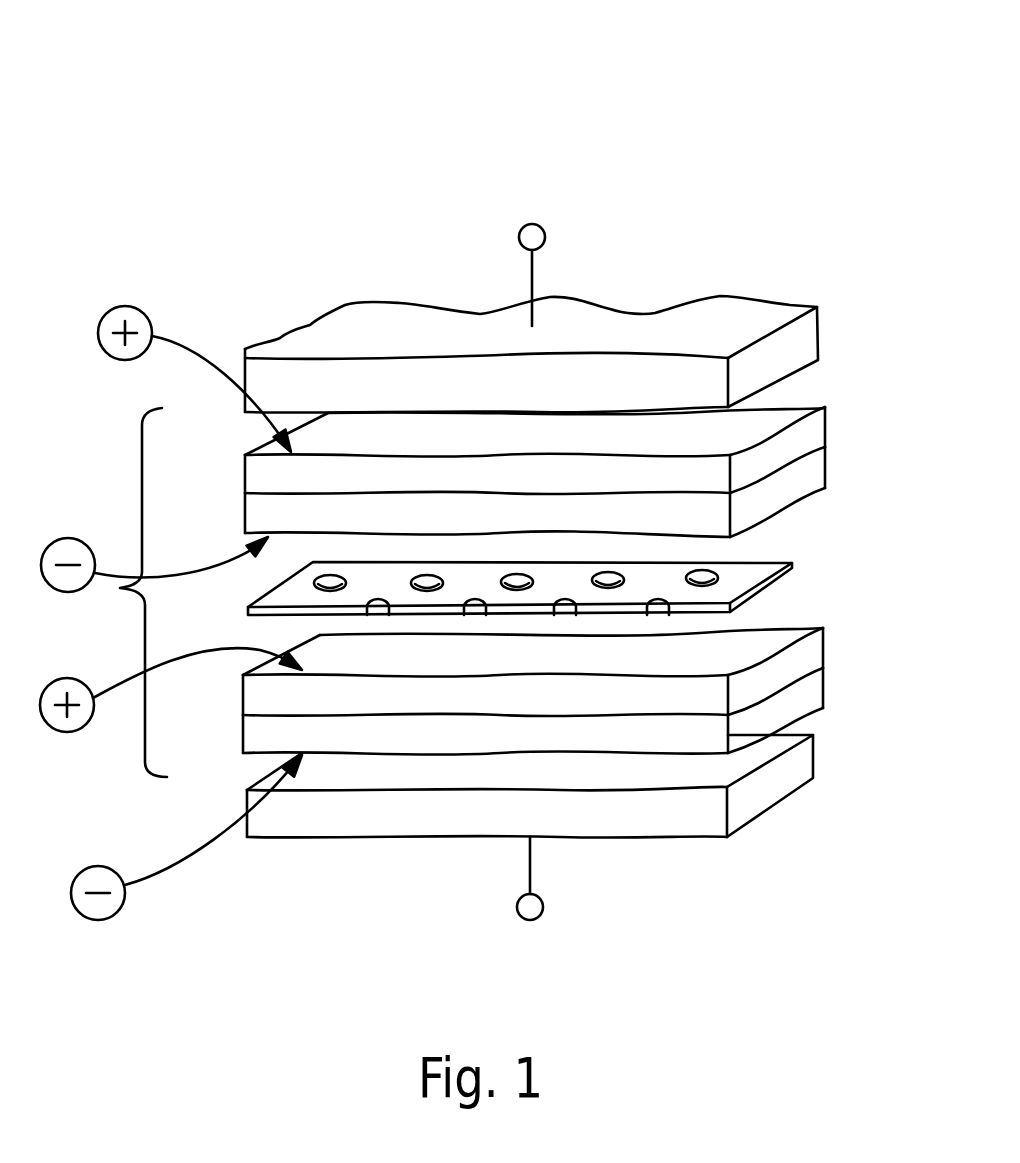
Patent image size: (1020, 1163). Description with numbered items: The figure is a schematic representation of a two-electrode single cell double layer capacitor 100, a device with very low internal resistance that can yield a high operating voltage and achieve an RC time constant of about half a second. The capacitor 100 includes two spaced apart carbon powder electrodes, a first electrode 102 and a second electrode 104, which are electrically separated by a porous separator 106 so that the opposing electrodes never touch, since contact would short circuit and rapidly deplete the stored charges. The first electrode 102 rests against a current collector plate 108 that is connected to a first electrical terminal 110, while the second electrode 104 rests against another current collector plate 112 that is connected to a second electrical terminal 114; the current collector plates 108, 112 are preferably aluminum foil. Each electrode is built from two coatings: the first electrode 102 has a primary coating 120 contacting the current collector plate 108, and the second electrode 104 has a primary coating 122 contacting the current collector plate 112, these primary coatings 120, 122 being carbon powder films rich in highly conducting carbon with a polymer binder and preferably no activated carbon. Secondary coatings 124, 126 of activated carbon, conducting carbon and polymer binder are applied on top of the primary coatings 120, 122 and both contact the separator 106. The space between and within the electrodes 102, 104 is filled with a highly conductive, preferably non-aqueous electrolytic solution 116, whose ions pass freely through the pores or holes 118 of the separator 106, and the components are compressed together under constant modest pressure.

The double layer capacitor 100 is at (752, 154).
The first electrode 102 is at (554, 460).
The second electrode 104 is at (554, 676).
The porous separator 106 is at (556, 567).
The current collector plate 108 is at (752, 312).
The first electrical terminal 110 is at (543, 227).
The current collector plate 112 is at (695, 822).
The second electrical terminal 114 is at (532, 920).
The electrolytic solution 116 is at (130, 587).
The pores or holes 118 is at (314, 582).
The primary coating 120 is at (262, 480).
The primary coating 122 is at (262, 750).
The secondary coating 124 is at (262, 521).
The secondary coating 126 is at (262, 698).